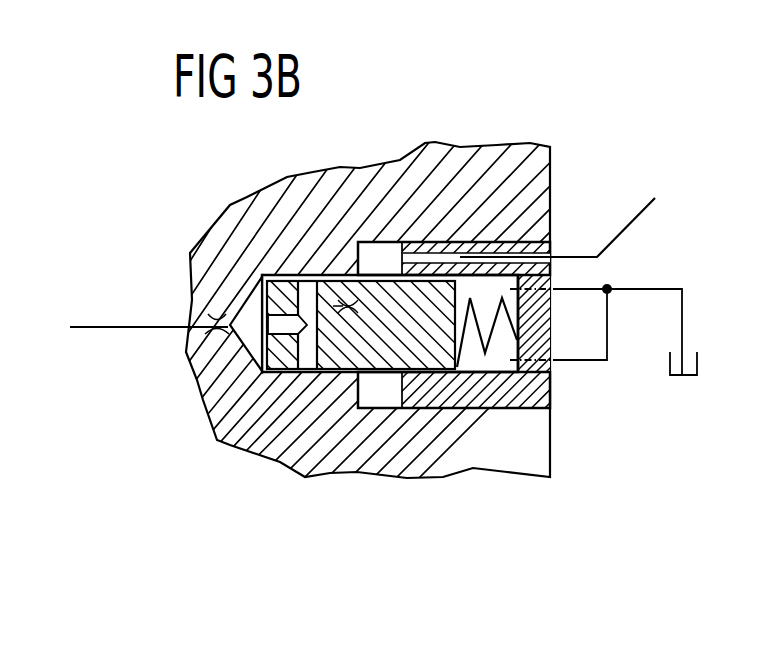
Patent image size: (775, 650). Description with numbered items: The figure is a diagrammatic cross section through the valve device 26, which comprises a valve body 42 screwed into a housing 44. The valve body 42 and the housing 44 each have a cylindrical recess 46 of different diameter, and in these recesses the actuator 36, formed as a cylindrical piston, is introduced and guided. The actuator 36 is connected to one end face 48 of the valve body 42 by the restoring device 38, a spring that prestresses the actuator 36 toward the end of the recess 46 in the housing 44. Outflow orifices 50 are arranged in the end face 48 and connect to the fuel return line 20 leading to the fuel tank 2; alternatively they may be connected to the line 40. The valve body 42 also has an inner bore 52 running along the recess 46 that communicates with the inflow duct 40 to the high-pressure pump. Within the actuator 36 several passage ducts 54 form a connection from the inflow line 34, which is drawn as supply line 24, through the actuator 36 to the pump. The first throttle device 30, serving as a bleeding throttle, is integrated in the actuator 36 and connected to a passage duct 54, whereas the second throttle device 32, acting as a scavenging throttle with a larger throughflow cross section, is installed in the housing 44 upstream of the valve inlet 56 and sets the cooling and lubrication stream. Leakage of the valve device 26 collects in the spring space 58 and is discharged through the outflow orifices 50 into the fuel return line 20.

The fuel tank 2 is at (697, 360).
The fuel return line 20 is at (683, 312).
The supply line 24 is at (138, 328).
The valve device 26 is at (178, 210).
The first throttle device 30 is at (312, 288).
The second throttle device 32 is at (222, 323).
The inflow line 34 is at (103, 325).
The actuator 36 is at (345, 370).
The restoring device 38 is at (482, 333).
The inflow duct 40 is at (632, 218).
The valve body 42 is at (550, 405).
The housing 44 is at (456, 160).
The cylindrical recess 46 is at (388, 240).
The end face 48 is at (548, 275).
The outflow orifices 50 is at (550, 310).
The inner bore 52 is at (462, 257).
The passage ducts 54 is at (268, 282).
The valve inlet 56 is at (205, 315).
The spring space 58 is at (500, 370).